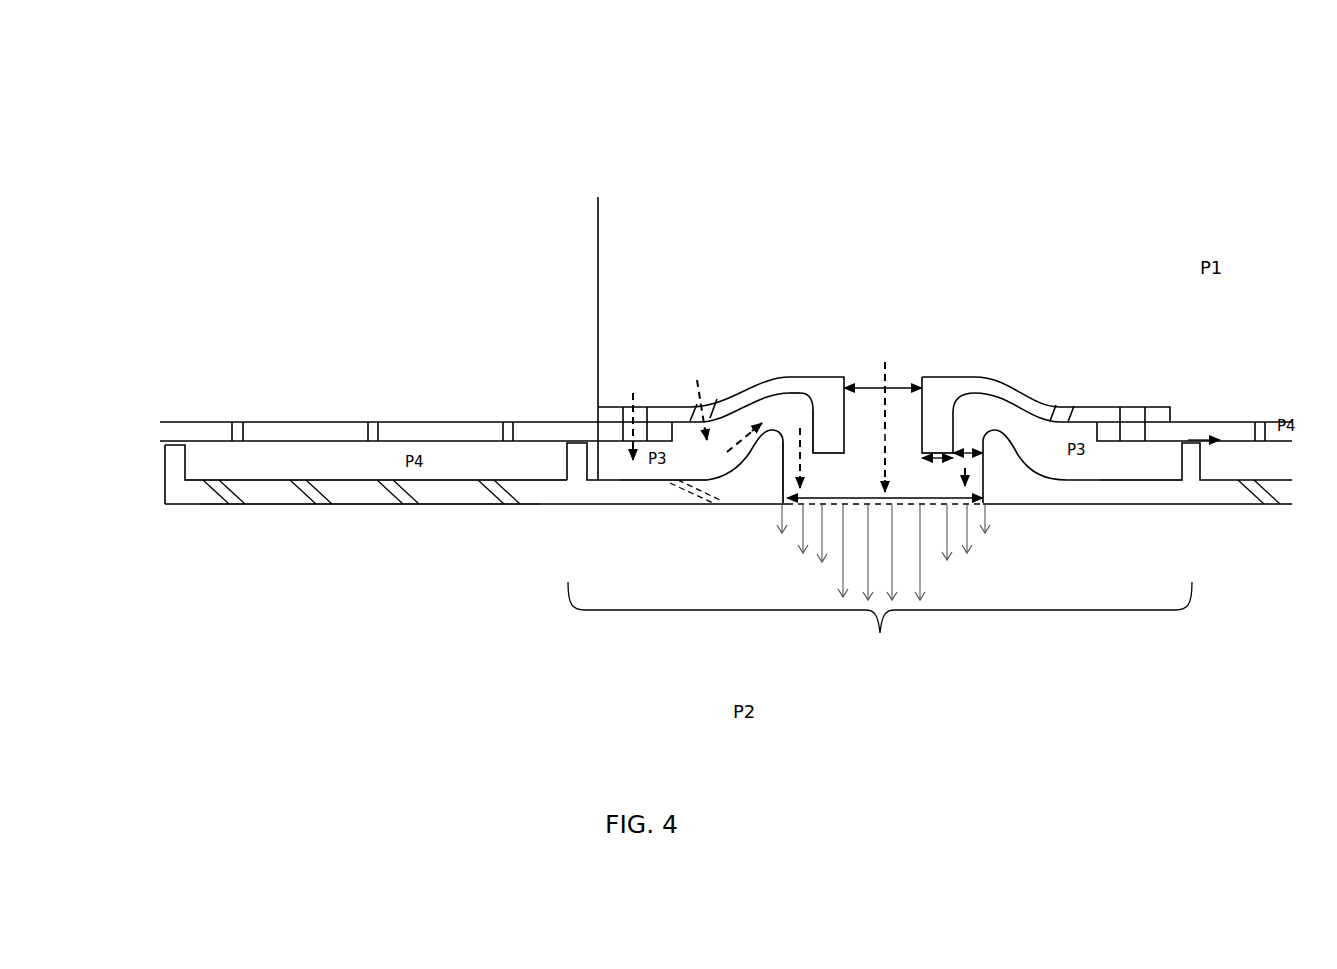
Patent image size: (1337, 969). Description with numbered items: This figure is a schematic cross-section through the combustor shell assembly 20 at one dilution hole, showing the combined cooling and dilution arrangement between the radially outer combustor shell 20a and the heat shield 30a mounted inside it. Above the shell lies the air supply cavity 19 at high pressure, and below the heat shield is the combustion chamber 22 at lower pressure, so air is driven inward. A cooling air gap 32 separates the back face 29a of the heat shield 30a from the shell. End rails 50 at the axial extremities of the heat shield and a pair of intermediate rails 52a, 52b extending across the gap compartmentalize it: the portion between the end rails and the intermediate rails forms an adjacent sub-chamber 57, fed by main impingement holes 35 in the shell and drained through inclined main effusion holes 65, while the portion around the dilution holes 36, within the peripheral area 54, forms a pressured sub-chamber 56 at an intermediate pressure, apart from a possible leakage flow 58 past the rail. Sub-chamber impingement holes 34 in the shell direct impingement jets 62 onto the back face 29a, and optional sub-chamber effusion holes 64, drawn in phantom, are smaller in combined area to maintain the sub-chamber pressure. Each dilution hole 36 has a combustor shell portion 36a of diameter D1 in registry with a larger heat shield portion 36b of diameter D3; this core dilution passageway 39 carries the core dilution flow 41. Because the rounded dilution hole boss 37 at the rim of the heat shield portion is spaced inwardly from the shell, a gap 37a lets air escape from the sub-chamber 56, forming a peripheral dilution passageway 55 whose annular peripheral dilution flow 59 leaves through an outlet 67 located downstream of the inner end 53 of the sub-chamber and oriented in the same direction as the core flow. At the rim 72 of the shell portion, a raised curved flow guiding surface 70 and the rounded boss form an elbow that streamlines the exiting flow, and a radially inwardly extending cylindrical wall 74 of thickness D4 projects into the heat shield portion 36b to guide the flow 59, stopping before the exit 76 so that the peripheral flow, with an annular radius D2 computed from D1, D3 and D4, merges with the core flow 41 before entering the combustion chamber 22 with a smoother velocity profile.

The combustor shell assembly 20 is at (270, 158).
The air supply cavity 19 is at (1058, 70).
The combustion chamber 22 is at (951, 715).
The radially outer combustor shell 20a is at (538, 430).
The heat shield 30a is at (252, 491).
The back face of the heat shield 29a is at (587, 683).
The cooling air gap 32 is at (1300, 588).
The sub-chamber impingement holes 34 is at (695, 400).
The main impingement holes 35 is at (500, 418).
The dilution holes 36 is at (863, 388).
The combustor shell portion of the dilution holes 36a is at (922, 377).
The heat shield portion of the dilution holes 36b is at (983, 463).
The dilution hole boss 37 is at (772, 450).
The gap between boss and combustor shell 37a is at (793, 414).
The core dilution passageway 39 is at (865, 437).
The core dilution flow 41 is at (896, 427).
The end rails 50 is at (175, 465).
The intermediate rail 52a is at (576, 464).
The intermediate rail 52b is at (1191, 467).
The inner end of the sub-chamber 53 is at (768, 418).
The peripheral area of the dilution holes 54 is at (880, 624).
The peripheral dilution passageway 55 is at (793, 414).
The pressured sub-chamber 56 is at (682, 459).
The adjacent sub-chamber 57 is at (312, 468).
The leakage flow 58 is at (1195, 438).
The peripheral dilution flow 59 is at (882, 458).
The impingement jet 62 is at (685, 424).
The sub-chamber effusion holes 64 is at (707, 507).
The main effusion holes 65 is at (410, 507).
The outlet of peripheral dilution flow 67 is at (978, 423).
The curved flow guiding surface 70 is at (786, 391).
The rim of the dilution holes 72 is at (828, 393).
The radially inwardly extending cylindrical wall 74 is at (938, 418).
The exit of the core dilution passageway 76 is at (883, 552).
The diameter of the combustor shell portion D1 is at (883, 400).
The annular radius of the peripheral dilution flow D2 is at (969, 440).
The diameter of the heat shield portion D3 is at (885, 492).
The thickness of the cylindrical wall D4 is at (929, 473).